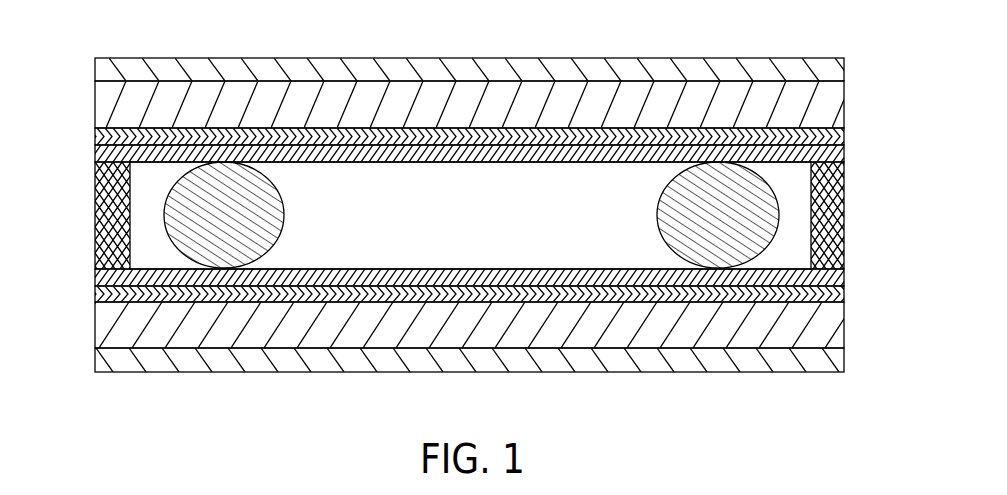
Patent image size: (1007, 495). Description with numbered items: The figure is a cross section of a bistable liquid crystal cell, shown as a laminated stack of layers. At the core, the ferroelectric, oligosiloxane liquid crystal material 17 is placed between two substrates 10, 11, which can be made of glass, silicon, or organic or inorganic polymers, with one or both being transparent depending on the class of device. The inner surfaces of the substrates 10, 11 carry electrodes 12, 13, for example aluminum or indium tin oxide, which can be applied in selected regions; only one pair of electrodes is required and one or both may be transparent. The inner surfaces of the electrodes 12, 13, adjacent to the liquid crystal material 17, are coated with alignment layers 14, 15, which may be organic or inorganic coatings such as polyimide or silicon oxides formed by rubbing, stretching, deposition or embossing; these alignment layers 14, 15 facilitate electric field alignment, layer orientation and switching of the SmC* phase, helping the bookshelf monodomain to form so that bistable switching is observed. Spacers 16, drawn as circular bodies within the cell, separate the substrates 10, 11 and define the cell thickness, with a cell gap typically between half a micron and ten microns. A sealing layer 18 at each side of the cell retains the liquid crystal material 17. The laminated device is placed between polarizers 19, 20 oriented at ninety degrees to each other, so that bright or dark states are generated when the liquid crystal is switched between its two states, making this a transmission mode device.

The substrate 10 is at (843, 106).
The substrate 11 is at (843, 323).
The electrode 12 is at (843, 139).
The electrode 13 is at (843, 291).
The alignment layer 14 is at (843, 152).
The alignment layer 15 is at (843, 276).
The spacer 16 is at (284, 206).
The ferroelectric oligosiloxane liquid crystal material 17 is at (142, 230).
The sealing layer 18 is at (105, 185).
The polarizer 19 is at (821, 59).
The polarizer 20 is at (829, 372).